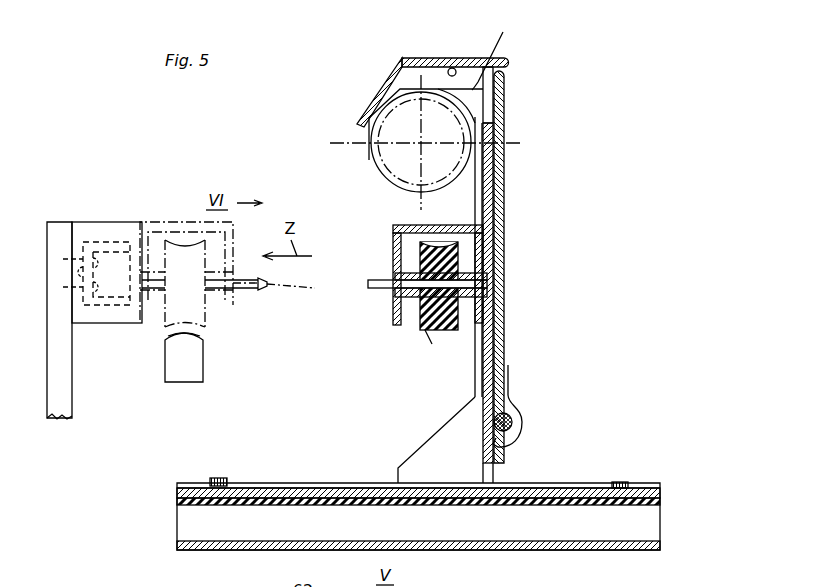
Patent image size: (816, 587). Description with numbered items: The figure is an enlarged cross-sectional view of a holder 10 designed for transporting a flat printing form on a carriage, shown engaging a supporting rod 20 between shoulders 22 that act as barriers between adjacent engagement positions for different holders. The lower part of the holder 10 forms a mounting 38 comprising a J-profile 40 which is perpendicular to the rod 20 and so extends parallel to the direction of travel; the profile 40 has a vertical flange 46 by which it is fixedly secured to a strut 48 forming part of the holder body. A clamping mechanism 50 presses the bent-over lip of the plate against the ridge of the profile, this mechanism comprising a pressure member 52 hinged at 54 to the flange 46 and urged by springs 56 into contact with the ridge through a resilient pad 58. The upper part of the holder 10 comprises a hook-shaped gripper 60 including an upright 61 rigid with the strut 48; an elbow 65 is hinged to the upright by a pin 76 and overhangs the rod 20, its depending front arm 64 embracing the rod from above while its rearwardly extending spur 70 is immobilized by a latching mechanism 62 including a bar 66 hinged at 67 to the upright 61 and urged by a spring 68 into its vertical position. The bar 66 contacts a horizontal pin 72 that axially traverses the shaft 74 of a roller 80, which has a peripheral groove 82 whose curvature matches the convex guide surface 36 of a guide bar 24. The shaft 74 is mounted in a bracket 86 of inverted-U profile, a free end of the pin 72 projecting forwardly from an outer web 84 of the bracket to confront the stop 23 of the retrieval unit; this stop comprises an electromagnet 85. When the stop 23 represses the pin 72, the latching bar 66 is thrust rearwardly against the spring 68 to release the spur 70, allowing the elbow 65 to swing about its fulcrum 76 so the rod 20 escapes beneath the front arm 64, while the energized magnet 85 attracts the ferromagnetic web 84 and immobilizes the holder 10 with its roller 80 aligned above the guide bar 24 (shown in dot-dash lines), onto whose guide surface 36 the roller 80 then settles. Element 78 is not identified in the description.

The holder 10 is at (615, 158).
The supporting rod 20 is at (375, 150).
The shoulders 22 is at (455, 187).
The stop 23 is at (105, 222).
The guide bar 24 is at (173, 378).
The convex guide surface 36 is at (170, 334).
The mounting 38 is at (167, 500).
The J-profile 40 is at (655, 534).
The flange 46 is at (648, 517).
The strut 48 is at (475, 372).
The clamping mechanism 50 is at (603, 450).
The pressure member 52 is at (662, 494).
The hinge 54 is at (642, 486).
The springs 56 is at (216, 480).
The resilient pad 58 is at (580, 505).
The hook-shaped gripper 60 is at (538, 190).
The upright 61 is at (494, 327).
The latching mechanism 62 is at (534, 84).
The front arm 64 is at (393, 64).
The elbow 65 is at (425, 57).
The bar 66 is at (505, 111).
The hinge 67 is at (513, 424).
The spring 68 is at (509, 402).
The spur 70 is at (510, 62).
The pin 72 is at (368, 284).
The shaft 74 is at (395, 276).
The pin 76 is at (455, 68).
The bracket assembly 78 is at (394, 341).
The roller 80 is at (205, 322).
The peripheral groove 82 is at (430, 333).
The outer web 84 is at (393, 242).
The electromagnet 85 is at (90, 305).
The bracket 86 is at (178, 222).